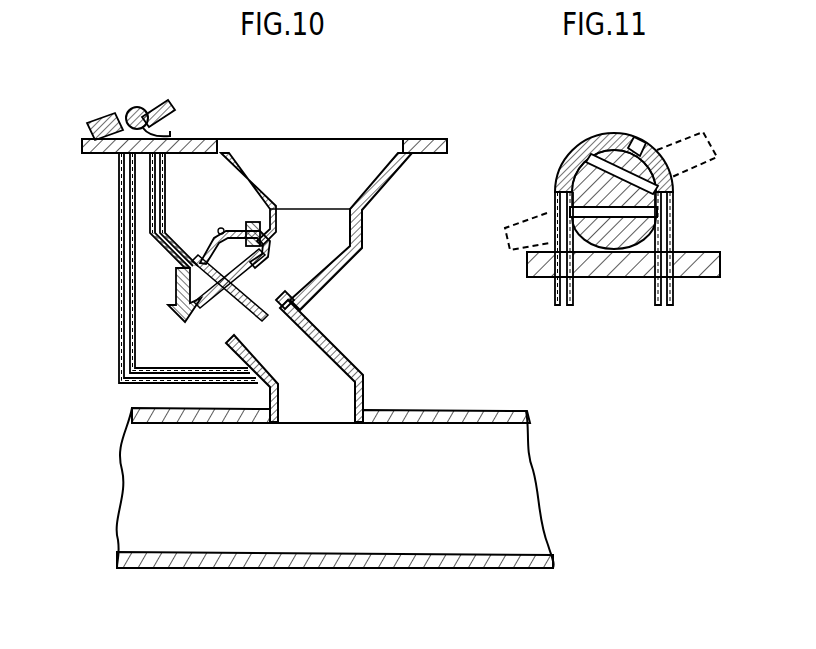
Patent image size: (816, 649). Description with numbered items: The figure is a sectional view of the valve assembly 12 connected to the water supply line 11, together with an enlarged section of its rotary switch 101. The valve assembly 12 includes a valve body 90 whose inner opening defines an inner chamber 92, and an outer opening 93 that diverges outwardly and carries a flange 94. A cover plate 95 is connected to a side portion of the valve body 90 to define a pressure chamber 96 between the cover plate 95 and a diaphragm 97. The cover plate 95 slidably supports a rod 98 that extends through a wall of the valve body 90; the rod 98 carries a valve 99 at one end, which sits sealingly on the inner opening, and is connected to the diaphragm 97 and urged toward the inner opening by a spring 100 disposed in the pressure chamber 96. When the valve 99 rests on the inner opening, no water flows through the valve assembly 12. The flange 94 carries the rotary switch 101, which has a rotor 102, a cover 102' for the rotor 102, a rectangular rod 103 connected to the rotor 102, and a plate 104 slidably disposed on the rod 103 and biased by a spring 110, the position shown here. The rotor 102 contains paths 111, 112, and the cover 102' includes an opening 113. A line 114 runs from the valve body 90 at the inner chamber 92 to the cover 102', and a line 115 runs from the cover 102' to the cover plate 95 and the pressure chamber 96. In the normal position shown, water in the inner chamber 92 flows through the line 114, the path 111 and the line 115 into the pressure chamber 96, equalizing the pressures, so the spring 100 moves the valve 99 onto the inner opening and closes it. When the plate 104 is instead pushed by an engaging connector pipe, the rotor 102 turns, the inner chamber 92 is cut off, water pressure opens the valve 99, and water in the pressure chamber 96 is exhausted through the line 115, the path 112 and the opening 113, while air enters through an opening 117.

In FIG. 10, the water supply line 11 is at (447, 418).
In FIG. 10, the valve assembly 12 is at (403, 205).
In FIG. 10, the valve body 90 is at (358, 255).
In FIG. 10, the inner chamber 92 is at (337, 380).
In FIG. 10, the outer opening 93 is at (347, 142).
In FIG. 10, the flange 94 is at (213, 143).
In FIG. 11, the flange 94 is at (698, 270).
In FIG. 10, the cover plate 95 is at (227, 230).
In FIG. 10, the pressure chamber 96 is at (200, 283).
In FIG. 10, the diaphragm 97 is at (243, 230).
In FIG. 10, the rod 98 is at (310, 243).
In FIG. 10, the valve 99 is at (267, 320).
In FIG. 10, the spring 100 is at (221, 228).
In FIG. 10, the rotary switch 101 is at (132, 108).
In FIG. 11, the rotary switch 101 is at (584, 126).
In FIG. 11, the rotor 102 is at (589, 165).
In FIG. 11, the cover 102' is at (570, 208).
In FIG. 10, the rectangular rod 103 is at (122, 110).
In FIG. 10, the plate 104 is at (157, 105).
In FIG. 11, the plate 104 is at (703, 137).
In FIG. 10, the spring 110 is at (160, 124).
In FIG. 11, the path 111 is at (672, 198).
In FIG. 11, the path 112 is at (608, 147).
In FIG. 11, the opening 113 is at (633, 143).
In FIG. 10, the line 114 is at (120, 257).
In FIG. 11, the line 114 is at (557, 295).
In FIG. 10, the line 115 is at (148, 205).
In FIG. 11, the line 115 is at (653, 295).
In FIG. 10, the opening 117 is at (200, 315).